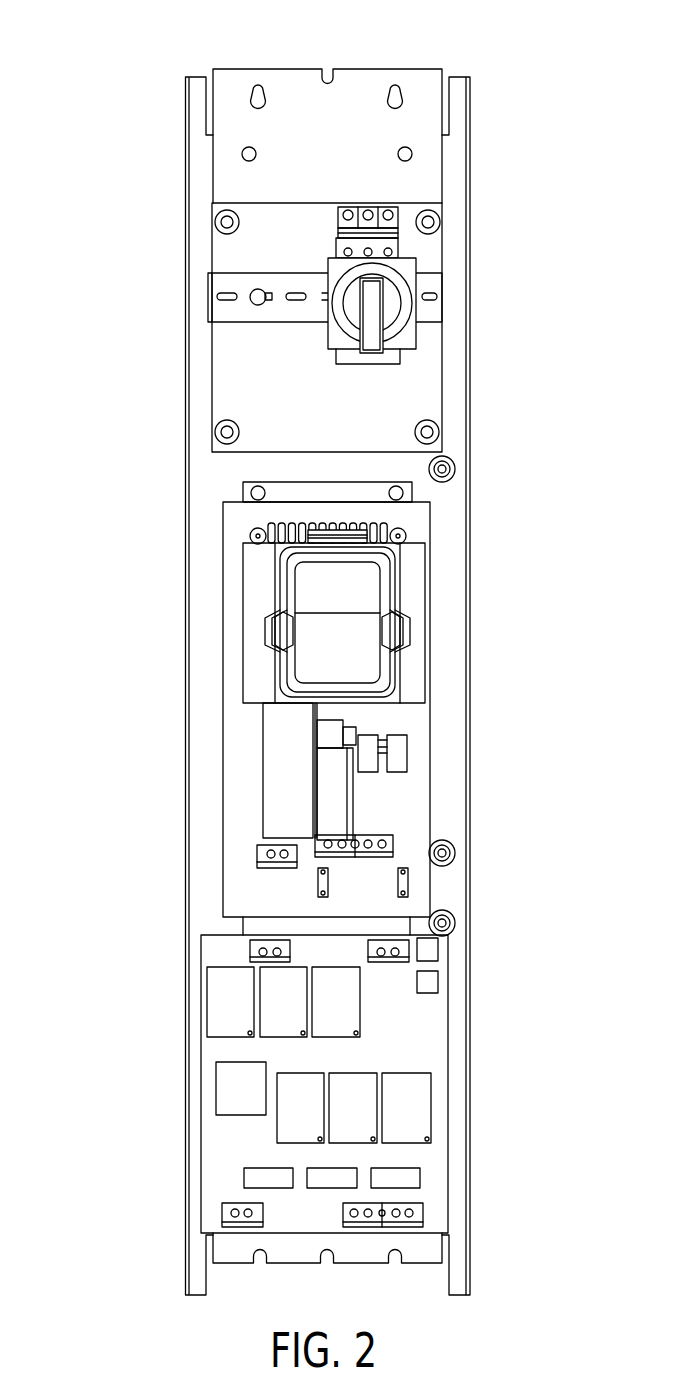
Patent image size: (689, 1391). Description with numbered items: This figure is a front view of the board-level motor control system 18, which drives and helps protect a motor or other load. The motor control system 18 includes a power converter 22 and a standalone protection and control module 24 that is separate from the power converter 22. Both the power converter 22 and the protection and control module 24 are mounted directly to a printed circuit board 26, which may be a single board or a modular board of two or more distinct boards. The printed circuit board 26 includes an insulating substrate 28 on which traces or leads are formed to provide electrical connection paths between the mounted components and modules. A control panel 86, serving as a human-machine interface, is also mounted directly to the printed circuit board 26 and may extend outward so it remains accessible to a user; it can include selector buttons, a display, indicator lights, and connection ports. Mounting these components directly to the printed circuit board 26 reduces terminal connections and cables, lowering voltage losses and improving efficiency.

The motor control system 18 is at (117, 47).
The power converter 22 is at (445, 888).
The protection and control module 24 is at (487, 1083).
The printed circuit board 26 is at (160, 750).
The insulating substrate 28 is at (482, 434).
The control panel 86 is at (395, 522).